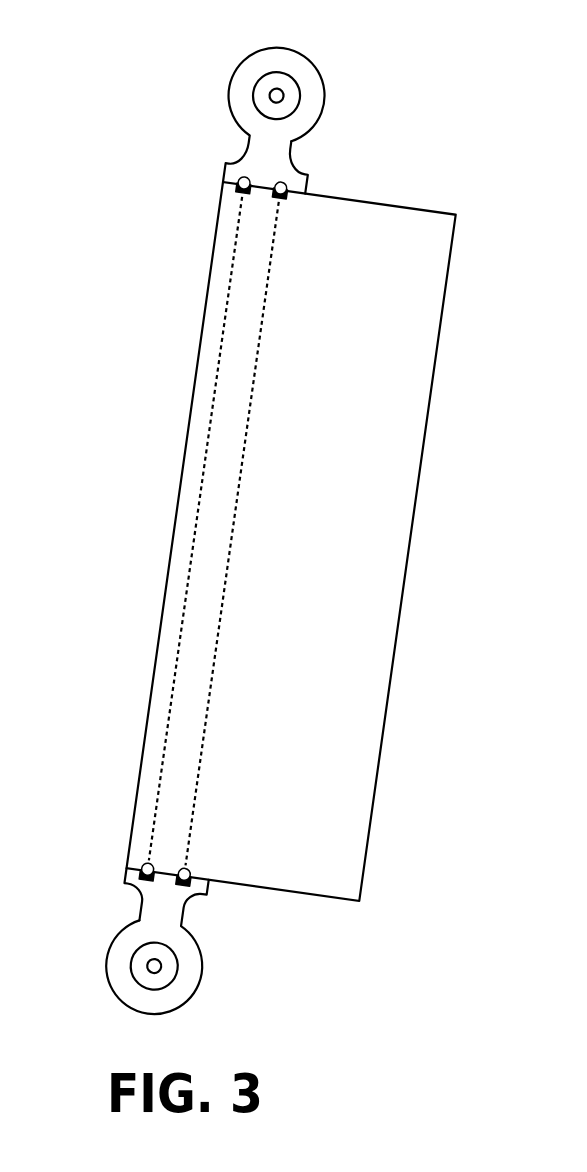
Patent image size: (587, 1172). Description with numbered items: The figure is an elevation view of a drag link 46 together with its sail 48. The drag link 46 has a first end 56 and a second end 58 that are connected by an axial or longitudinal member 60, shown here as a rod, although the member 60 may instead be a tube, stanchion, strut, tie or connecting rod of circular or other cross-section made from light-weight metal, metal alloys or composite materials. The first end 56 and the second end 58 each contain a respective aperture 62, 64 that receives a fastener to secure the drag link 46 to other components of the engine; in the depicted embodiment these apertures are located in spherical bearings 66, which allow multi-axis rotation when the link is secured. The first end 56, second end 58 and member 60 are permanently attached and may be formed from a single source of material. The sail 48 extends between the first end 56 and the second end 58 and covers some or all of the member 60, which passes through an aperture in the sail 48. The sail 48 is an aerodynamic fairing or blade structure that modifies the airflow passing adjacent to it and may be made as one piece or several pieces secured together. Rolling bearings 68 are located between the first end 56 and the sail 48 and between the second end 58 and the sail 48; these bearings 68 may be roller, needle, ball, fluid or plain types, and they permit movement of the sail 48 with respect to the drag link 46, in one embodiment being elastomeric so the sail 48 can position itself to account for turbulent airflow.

The drag link 46 is at (273, 541).
The sail 48 is at (382, 520).
The first end 56 is at (310, 107).
The second end 58 is at (108, 968).
The axial or longitudinal member 60 is at (220, 500).
The aperture 62 is at (279, 97).
The aperture 64 is at (157, 968).
The spherical bearing 66 is at (258, 100).
The rolling bearing 68 is at (290, 191).